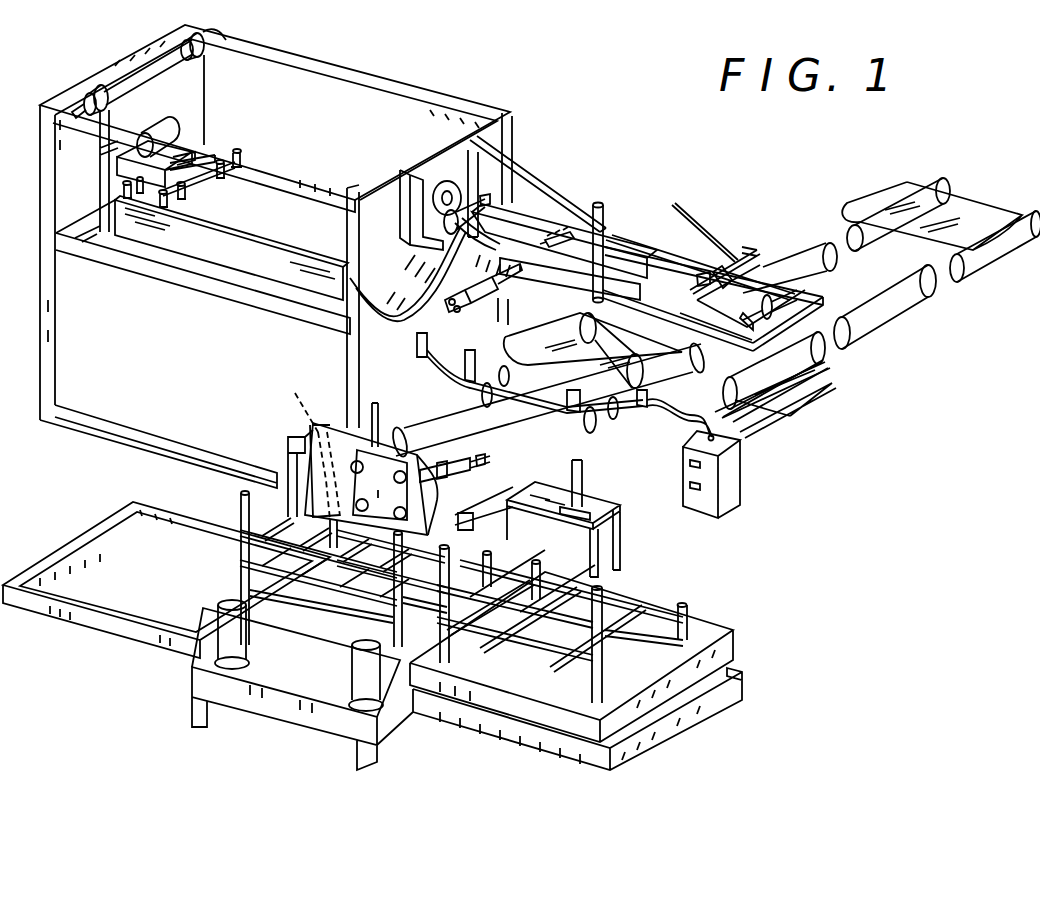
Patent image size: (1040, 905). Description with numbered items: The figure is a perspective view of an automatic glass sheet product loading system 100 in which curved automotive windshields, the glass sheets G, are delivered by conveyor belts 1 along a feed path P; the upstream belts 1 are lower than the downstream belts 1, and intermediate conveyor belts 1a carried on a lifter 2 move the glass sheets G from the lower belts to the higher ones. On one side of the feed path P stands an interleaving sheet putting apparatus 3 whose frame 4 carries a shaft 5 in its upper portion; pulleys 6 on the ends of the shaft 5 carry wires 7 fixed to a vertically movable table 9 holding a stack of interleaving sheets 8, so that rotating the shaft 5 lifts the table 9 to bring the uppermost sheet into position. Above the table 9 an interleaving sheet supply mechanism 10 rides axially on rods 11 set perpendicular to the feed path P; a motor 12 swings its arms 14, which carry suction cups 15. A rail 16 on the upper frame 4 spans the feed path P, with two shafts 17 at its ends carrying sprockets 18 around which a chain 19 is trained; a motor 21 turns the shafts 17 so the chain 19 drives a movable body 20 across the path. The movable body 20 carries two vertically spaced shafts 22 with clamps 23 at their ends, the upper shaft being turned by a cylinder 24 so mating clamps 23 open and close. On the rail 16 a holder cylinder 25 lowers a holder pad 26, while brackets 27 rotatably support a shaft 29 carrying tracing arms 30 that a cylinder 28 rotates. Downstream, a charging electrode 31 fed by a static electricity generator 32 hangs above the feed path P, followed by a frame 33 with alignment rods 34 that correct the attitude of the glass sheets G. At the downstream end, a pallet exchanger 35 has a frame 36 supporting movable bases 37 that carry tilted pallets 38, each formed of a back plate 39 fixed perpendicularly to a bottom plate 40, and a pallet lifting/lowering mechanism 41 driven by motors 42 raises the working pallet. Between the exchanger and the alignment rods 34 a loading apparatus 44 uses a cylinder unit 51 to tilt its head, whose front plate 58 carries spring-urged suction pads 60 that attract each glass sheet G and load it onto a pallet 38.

The conveyor belts 1 is at (804, 246).
The intermediate conveyor belts 1a is at (822, 372).
The lifter 2 is at (808, 405).
The interleaving sheet putting apparatus 3 is at (574, 99).
The frame 4 is at (384, 92).
The shaft 5 is at (149, 68).
The pulleys 6 is at (95, 95).
The wires 7 is at (207, 72).
The interleaving sheets 8 is at (236, 255).
The table 9 is at (150, 265).
The interleaving sheet supply mechanism 10 is at (193, 146).
The rods 11 is at (202, 163).
The motor 12 is at (155, 130).
The arms 14 is at (200, 177).
The suction cups 15 is at (240, 155).
The rail 16 is at (690, 255).
The shafts 17 is at (482, 180).
The sprockets 18 is at (441, 205).
The chain 19 is at (520, 210).
The movable body 20 is at (600, 230).
The motor 21 is at (453, 185).
The shafts 22 is at (550, 284).
The clamps 23 is at (470, 304).
The cylinder 24 is at (563, 232).
The holder cylinder 25 is at (613, 250).
The holder pad 26 is at (630, 286).
The brackets 27 is at (735, 260).
The cylinder 28 is at (722, 270).
The shaft 29 is at (672, 260).
The tracing arms 30 is at (593, 349).
The charging electrode 31 is at (532, 400).
The static electricity generator 32 is at (735, 478).
The frame 33 is at (610, 512).
The alignment rods 34 is at (376, 404).
The pallet exchanger 35 is at (104, 645).
The frame 36 is at (76, 540).
The bases 37 is at (292, 632).
The pallets 38 is at (233, 505).
The back plate 39 is at (244, 556).
The bottom plate 40 is at (300, 632).
The pallet lifting/lowering mechanism 41 is at (226, 700).
The motors 42 is at (222, 640).
The loading apparatus 44 is at (478, 515).
The cylinder unit 51 is at (470, 466).
The front plate 58 is at (341, 430).
The suction pads 60 is at (322, 490).
The automatic glass sheet product loading system 100 is at (890, 551).
The glass sheets G is at (885, 198).
The feed path P is at (851, 287).